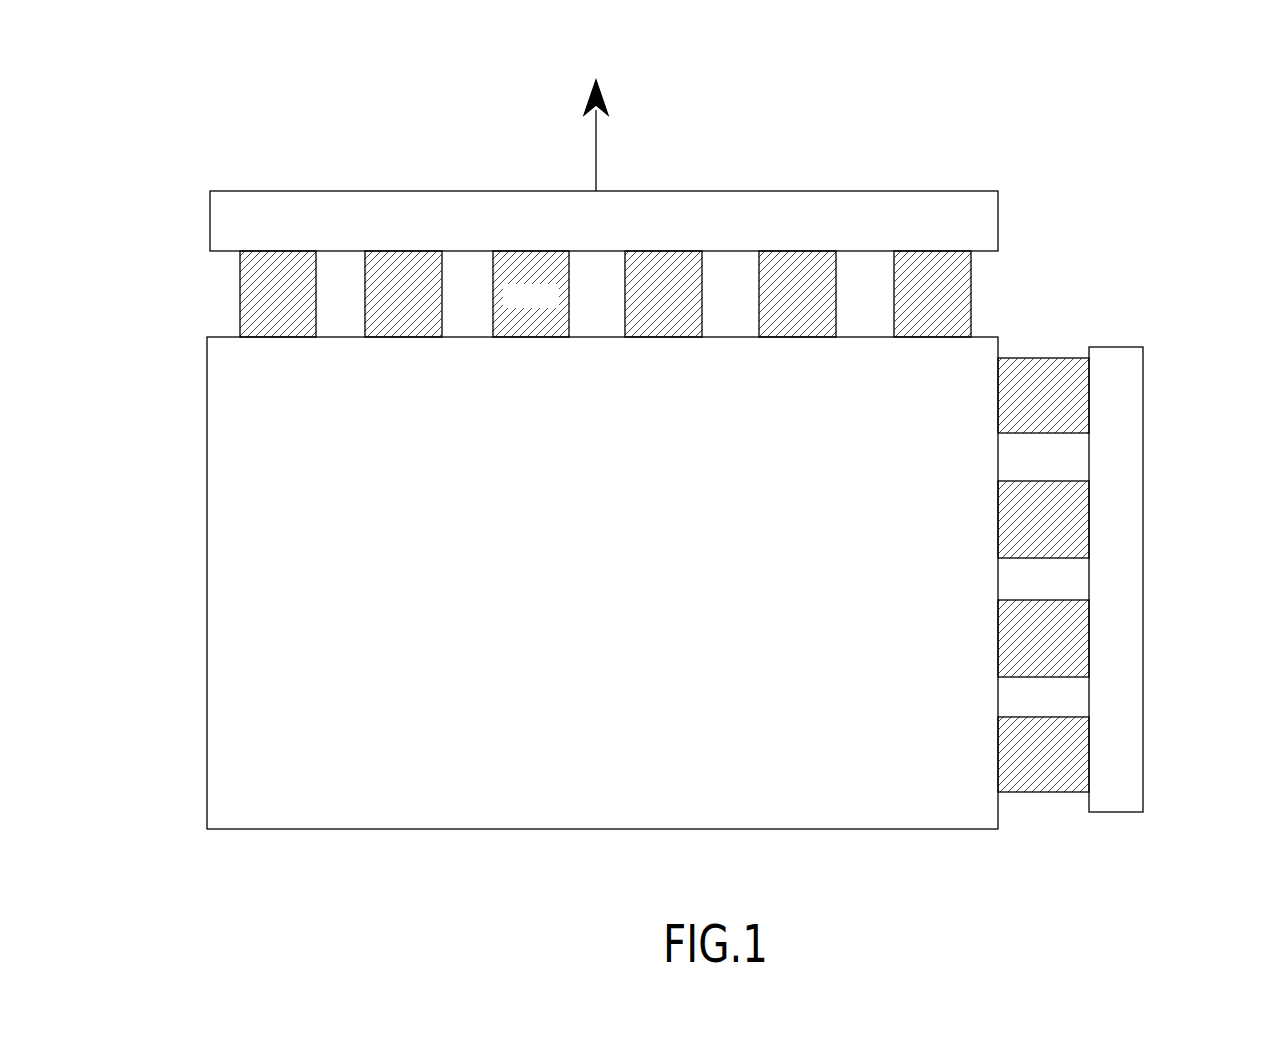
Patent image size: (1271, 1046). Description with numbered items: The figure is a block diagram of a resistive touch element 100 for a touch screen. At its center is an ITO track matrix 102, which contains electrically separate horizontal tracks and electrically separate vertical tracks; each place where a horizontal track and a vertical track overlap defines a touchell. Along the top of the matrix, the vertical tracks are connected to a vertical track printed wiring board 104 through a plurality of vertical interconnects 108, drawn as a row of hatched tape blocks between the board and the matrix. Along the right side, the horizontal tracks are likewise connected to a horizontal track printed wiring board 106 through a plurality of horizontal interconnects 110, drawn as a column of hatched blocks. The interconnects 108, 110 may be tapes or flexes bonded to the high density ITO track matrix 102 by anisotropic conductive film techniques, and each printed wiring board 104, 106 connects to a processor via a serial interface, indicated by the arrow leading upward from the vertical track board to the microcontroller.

The resistive touch element 100 is at (172, 105).
The ITO track matrix 102 is at (207, 390).
The vertical track printed wiring board 104 is at (998, 218).
The horizontal track printed wiring board 106 is at (1143, 425).
The vertical interconnects 108 is at (971, 288).
The horizontal interconnects 110 is at (1040, 792).